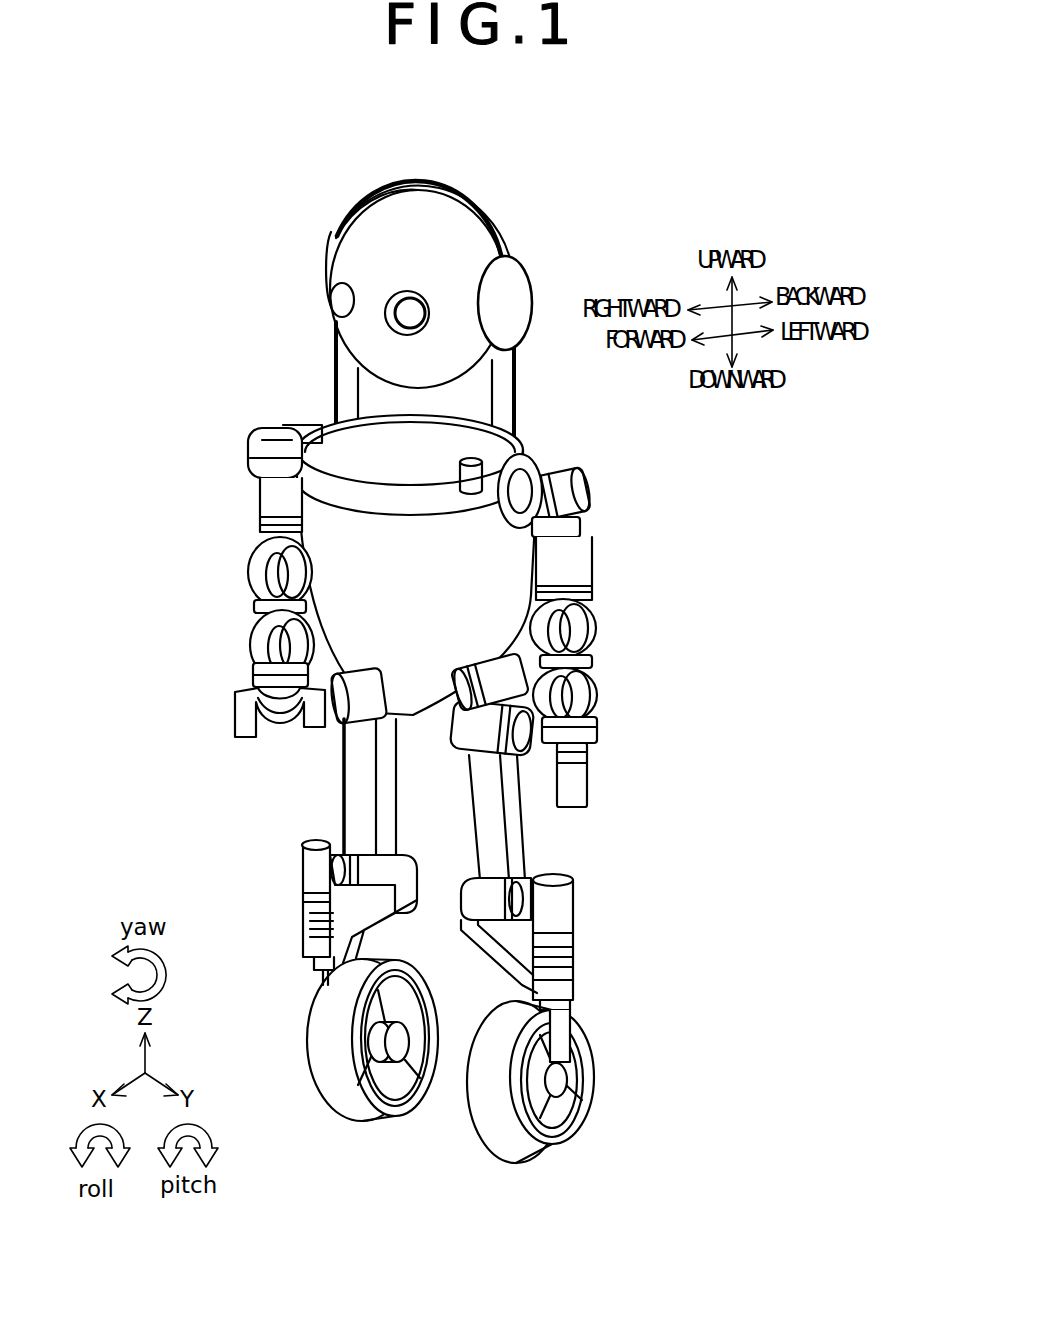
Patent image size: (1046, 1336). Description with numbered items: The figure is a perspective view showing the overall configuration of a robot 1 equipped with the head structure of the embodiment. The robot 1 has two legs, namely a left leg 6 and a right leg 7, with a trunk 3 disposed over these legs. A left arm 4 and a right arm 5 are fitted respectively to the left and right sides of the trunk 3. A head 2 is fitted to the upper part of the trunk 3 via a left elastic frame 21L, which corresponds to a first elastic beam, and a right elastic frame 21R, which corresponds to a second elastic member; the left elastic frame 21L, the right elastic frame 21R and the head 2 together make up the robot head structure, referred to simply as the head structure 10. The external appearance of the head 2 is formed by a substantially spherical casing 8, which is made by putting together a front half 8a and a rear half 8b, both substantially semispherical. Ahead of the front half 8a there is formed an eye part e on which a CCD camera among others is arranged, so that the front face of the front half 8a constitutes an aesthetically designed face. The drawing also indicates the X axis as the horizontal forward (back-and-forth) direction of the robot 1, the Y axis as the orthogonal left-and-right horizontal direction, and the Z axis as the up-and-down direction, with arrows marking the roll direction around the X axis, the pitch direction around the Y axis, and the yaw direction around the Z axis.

The robot 1 is at (547, 196).
The head structure 10 is at (273, 273).
The head 2 is at (460, 286).
The trunk 3 is at (408, 603).
The left arm 4 is at (587, 522).
The right arm 5 is at (267, 425).
The left leg 6 is at (517, 818).
The right leg 7 is at (355, 784).
The casing 8 is at (438, 133).
The front half 8a is at (387, 213).
The rear half 8b is at (445, 188).
The right elastic frame 21R is at (330, 384).
The left elastic frame 21L is at (513, 382).
The eye part e is at (400, 300).